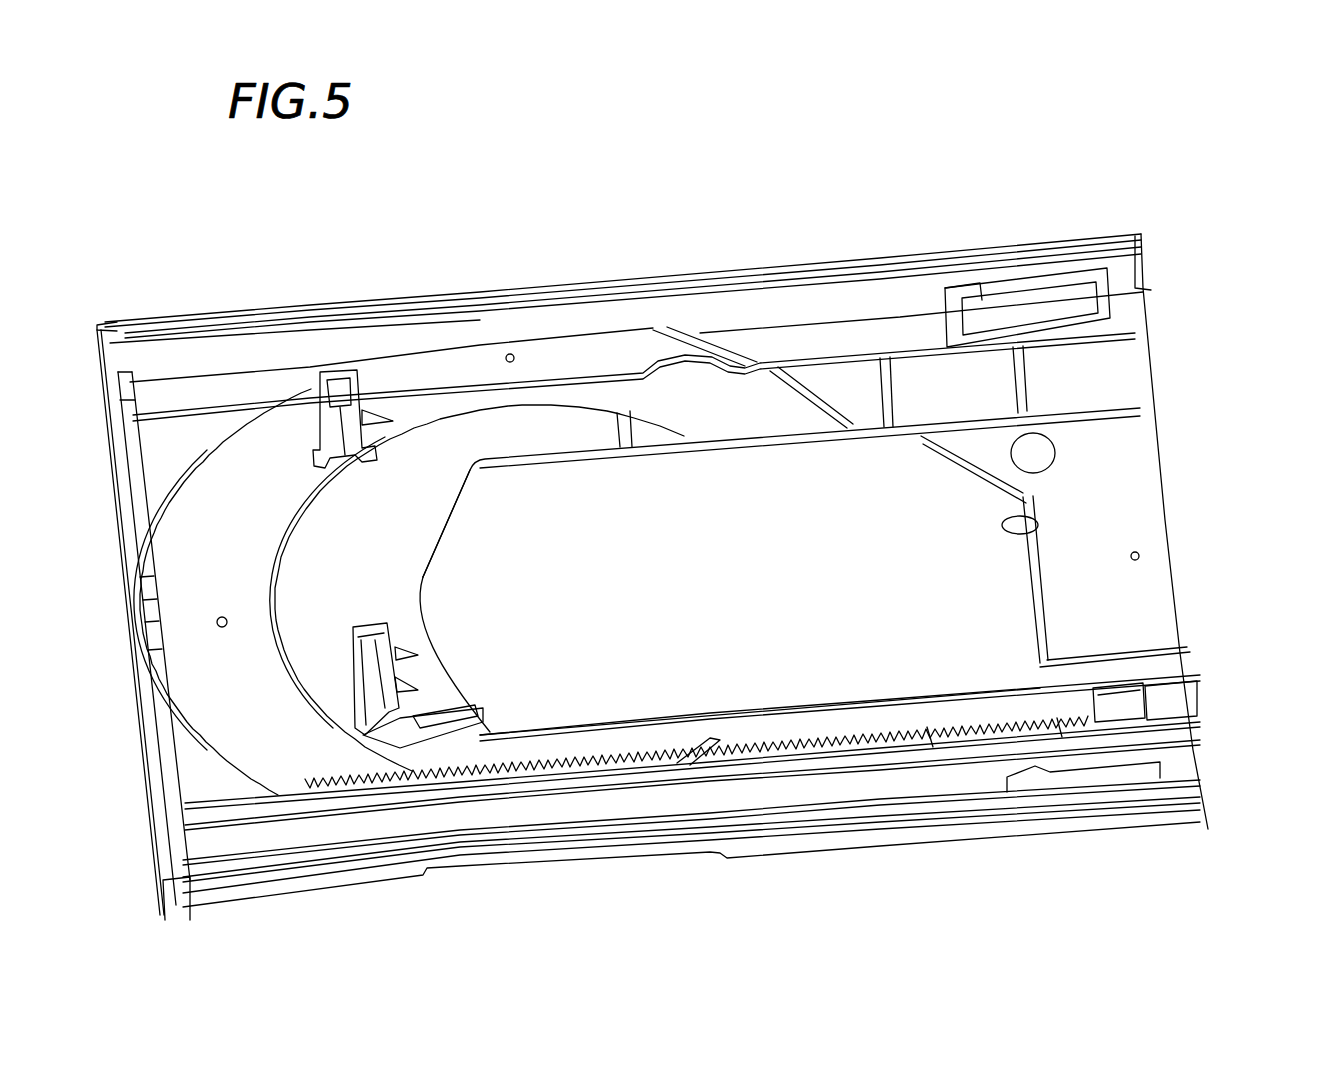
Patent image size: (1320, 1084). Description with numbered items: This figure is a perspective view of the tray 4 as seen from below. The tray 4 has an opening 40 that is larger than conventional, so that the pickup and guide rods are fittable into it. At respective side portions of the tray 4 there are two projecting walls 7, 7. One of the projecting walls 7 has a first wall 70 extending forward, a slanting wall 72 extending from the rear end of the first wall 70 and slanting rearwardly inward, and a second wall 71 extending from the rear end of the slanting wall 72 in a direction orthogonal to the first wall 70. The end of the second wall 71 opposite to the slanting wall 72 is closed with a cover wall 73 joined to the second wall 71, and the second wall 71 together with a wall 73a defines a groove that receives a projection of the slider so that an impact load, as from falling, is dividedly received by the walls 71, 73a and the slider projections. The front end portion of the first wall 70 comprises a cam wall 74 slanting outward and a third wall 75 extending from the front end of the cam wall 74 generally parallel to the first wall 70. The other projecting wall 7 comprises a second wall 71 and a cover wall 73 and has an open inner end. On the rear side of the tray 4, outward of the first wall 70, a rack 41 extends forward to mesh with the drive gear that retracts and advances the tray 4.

The tray 4 is at (1133, 368).
The opening 40 is at (1005, 526).
The rack 41 is at (1090, 725).
The projecting wall 7 is at (477, 205).
The first wall 70 is at (640, 720).
The second wall 71 is at (353, 398).
The slanting wall 72 is at (392, 722).
The cover wall 73 is at (360, 380).
The wall 73a is at (415, 652).
The cam wall 74 is at (1130, 690).
The third wall 75 is at (1162, 705).